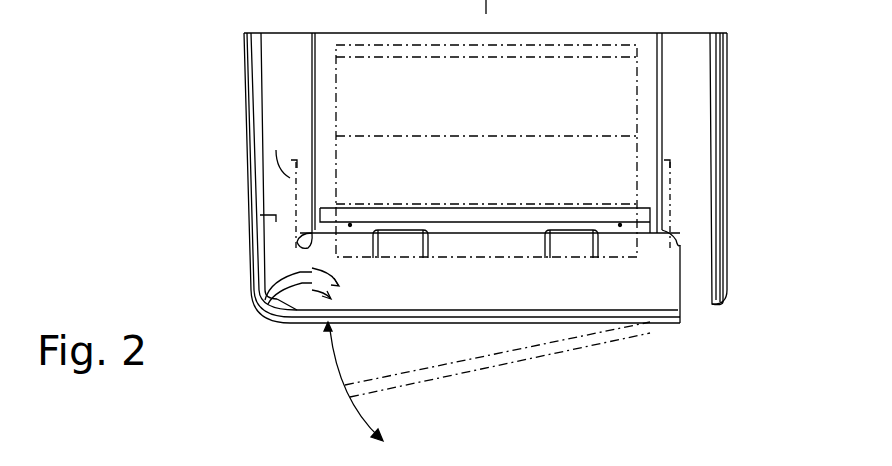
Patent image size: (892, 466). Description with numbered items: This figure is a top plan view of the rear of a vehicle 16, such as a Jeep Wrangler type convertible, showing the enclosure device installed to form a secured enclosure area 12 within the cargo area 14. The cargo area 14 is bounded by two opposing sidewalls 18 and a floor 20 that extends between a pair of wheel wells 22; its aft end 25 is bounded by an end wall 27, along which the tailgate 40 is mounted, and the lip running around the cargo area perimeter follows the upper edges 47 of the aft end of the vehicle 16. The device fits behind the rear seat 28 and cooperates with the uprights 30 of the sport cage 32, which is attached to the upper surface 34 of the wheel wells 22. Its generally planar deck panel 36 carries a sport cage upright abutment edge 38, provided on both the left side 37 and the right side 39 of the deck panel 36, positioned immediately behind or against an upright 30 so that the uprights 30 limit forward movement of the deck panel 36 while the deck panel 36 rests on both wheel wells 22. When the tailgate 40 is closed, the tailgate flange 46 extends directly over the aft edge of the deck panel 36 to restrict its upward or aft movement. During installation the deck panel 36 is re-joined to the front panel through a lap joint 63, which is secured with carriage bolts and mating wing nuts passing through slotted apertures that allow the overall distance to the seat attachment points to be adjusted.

The secured enclosure area 12 is at (278, 304).
The cargo area 14 is at (428, 297).
The vehicle 16 is at (250, 122).
The opposing sidewalls 18 is at (300, 278).
The floor 20 is at (288, 297).
The wheel wells 22 is at (276, 152).
The aft end 25 is at (283, 304).
The end wall 27 is at (308, 322).
The rear seat 28 is at (336, 108).
The sport cage uprights 30 is at (300, 268).
The sport cage 32 is at (293, 186).
The upper surface 34 is at (277, 256).
The deck panel 36 is at (546, 291).
The left side 37 is at (336, 264).
The sport cage upright abutment edge 38 is at (297, 240).
The right side 39 is at (675, 274).
The tailgate 40 is at (457, 367).
The tailgate flange 46 is at (430, 318).
The upper edges 47 is at (328, 326).
The lap joint 63 is at (645, 222).